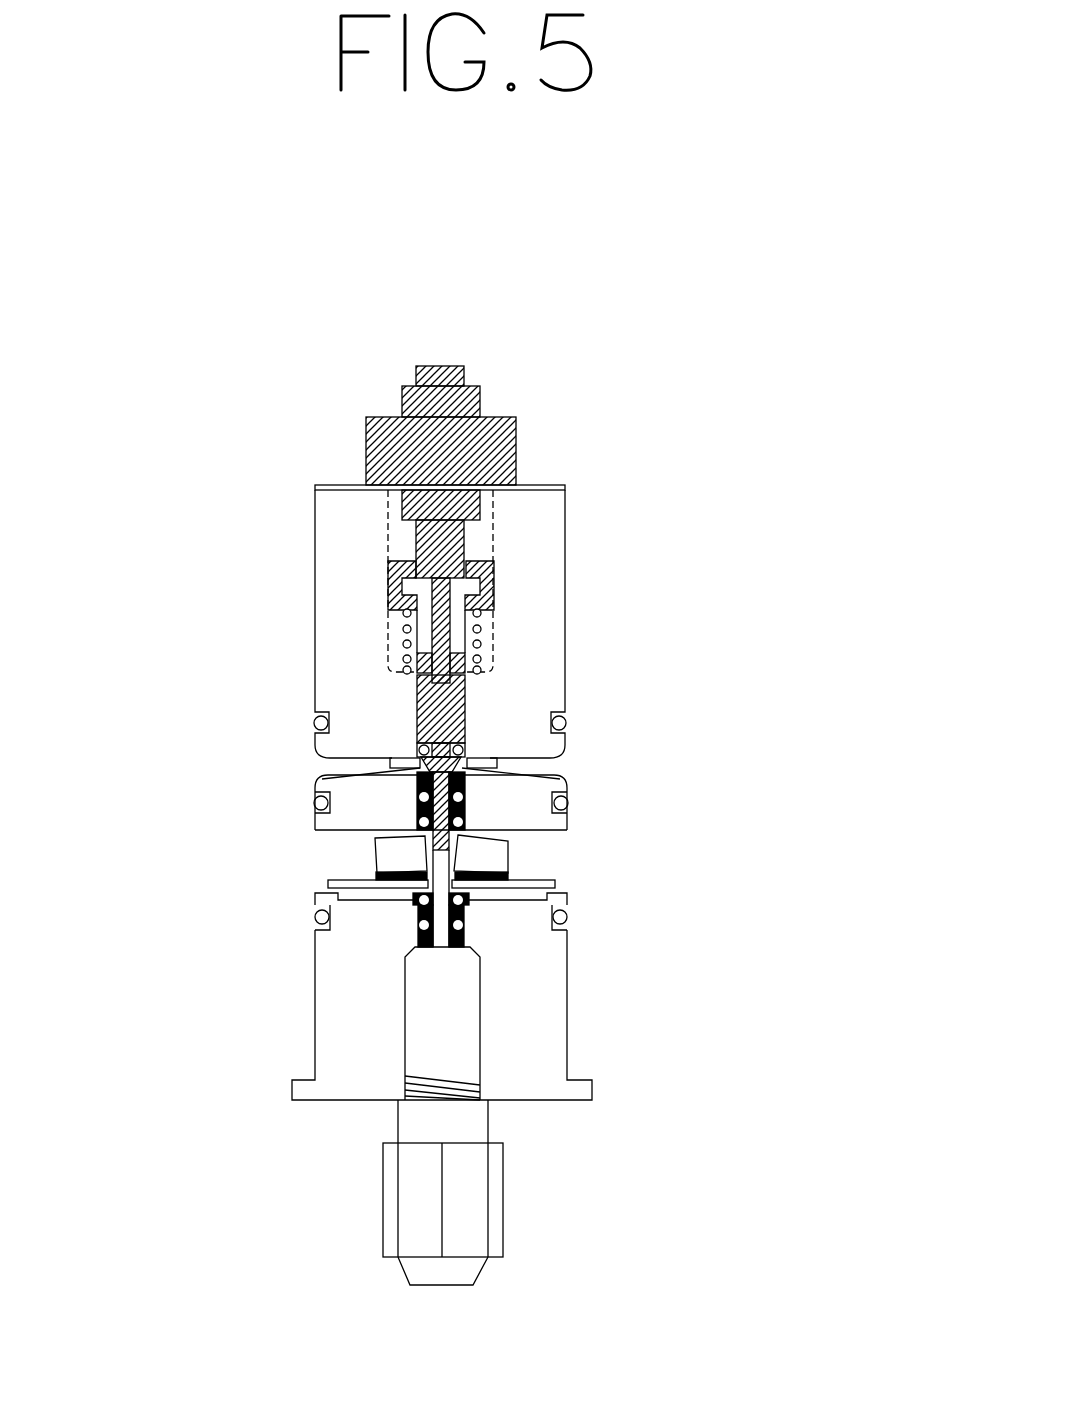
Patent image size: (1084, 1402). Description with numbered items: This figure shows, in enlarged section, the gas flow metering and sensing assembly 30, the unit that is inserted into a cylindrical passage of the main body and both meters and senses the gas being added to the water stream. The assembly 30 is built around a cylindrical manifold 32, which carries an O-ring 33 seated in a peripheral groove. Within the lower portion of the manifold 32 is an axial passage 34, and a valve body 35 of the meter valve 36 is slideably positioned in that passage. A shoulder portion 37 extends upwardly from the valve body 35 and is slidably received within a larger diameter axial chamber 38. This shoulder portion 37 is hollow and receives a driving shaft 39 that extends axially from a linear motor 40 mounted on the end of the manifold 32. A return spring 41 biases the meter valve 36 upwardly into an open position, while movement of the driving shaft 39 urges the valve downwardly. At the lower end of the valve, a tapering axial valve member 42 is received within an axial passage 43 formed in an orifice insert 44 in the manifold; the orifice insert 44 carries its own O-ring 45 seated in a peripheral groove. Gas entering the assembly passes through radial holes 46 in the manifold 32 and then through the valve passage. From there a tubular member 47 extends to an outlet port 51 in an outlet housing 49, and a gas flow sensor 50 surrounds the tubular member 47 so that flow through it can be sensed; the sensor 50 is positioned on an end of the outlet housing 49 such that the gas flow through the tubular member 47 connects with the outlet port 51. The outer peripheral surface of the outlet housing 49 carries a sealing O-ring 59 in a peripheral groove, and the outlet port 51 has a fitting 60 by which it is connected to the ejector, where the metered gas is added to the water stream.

The gas flow metering and sensing assembly 30 is at (573, 612).
The cylindrical manifold 32 is at (565, 652).
The O-ring 33 is at (497, 755).
The axial passage 34 is at (465, 734).
The valve body 35 is at (467, 696).
The meter valve 36 is at (425, 769).
The shoulder portion 37 is at (495, 585).
The axial chamber 38 is at (480, 538).
The driving shaft 39 is at (400, 598).
The linear motor 40 is at (405, 385).
The return spring 41 is at (403, 643).
The tapering axial valve member 42 is at (513, 870).
The axial passage 43 is at (468, 815).
The orifice insert 44 is at (497, 780).
The O-ring 45 is at (563, 804).
The radial holes 46 is at (420, 766).
The tubular member 47 is at (470, 902).
The outlet housing 49 is at (315, 1003).
The gas flow sensor 50 is at (372, 857).
The outlet port 51 is at (432, 1043).
The sealing O-ring 59 is at (568, 918).
The fitting 60 is at (510, 1245).